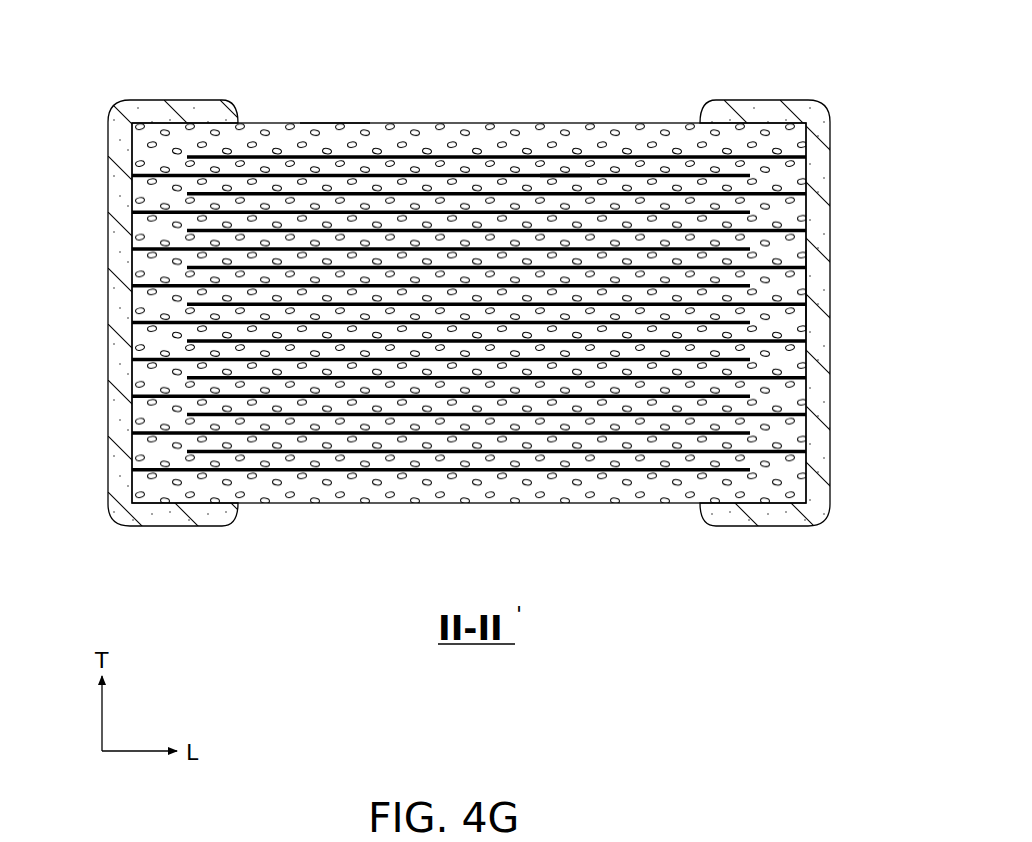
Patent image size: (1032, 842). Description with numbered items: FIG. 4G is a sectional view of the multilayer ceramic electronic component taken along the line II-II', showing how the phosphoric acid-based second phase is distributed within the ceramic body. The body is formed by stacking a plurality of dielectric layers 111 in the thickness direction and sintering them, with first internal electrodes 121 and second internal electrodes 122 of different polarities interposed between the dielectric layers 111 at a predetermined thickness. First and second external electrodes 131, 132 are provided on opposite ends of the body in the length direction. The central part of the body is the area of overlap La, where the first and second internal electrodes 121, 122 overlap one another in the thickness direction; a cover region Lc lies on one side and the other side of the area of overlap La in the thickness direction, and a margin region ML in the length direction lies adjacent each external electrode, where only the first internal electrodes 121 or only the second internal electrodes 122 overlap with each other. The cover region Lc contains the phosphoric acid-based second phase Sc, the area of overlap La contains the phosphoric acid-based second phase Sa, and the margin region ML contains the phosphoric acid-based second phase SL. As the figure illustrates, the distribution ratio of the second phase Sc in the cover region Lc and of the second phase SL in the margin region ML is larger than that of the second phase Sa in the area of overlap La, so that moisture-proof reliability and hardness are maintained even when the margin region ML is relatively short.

The dielectric layer 111 is at (460, 123).
The first internal electrode 121 is at (372, 450).
The second internal electrode 122 is at (483, 471).
The first external electrode 131 is at (178, 100).
The second external electrode 132 is at (756, 100).
The phosphoric acid-based second phase of the cover region Sc is at (335, 122).
The phosphoric acid-based second phase of the area of overlap Sa is at (565, 181).
The phosphoric acid-based second phase of the margin region in the length direction SL is at (798, 290).
The cover region Lc is at (130, 124).
The area of overlap La is at (79, 157).
The margin region in the length direction ML is at (187, 505).